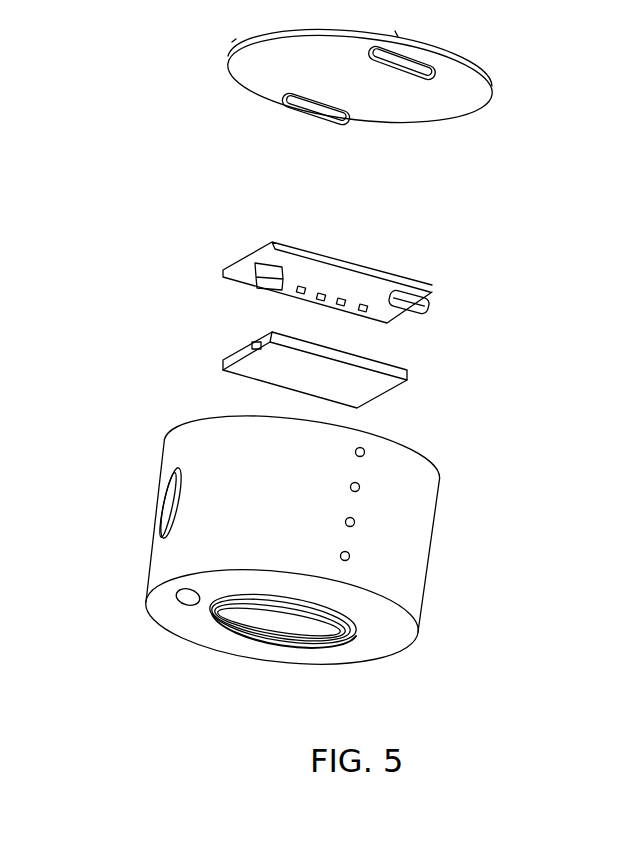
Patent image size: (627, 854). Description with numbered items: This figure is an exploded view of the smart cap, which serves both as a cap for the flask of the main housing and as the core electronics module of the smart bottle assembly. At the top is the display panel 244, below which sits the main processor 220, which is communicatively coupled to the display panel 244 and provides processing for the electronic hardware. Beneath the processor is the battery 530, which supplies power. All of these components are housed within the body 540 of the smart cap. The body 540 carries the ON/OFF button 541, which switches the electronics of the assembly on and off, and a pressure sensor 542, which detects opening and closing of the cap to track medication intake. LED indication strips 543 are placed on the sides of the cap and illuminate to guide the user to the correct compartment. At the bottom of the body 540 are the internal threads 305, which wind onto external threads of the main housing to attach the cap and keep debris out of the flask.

The display panel 244 is at (473, 62).
The main processor 220 is at (433, 285).
The battery 530 is at (405, 373).
The body 540 is at (182, 424).
The ON/OFF button 541 is at (162, 500).
The pressure sensor 542 is at (177, 597).
The LED indication strip 543 is at (362, 487).
The internal threads 305 is at (293, 643).